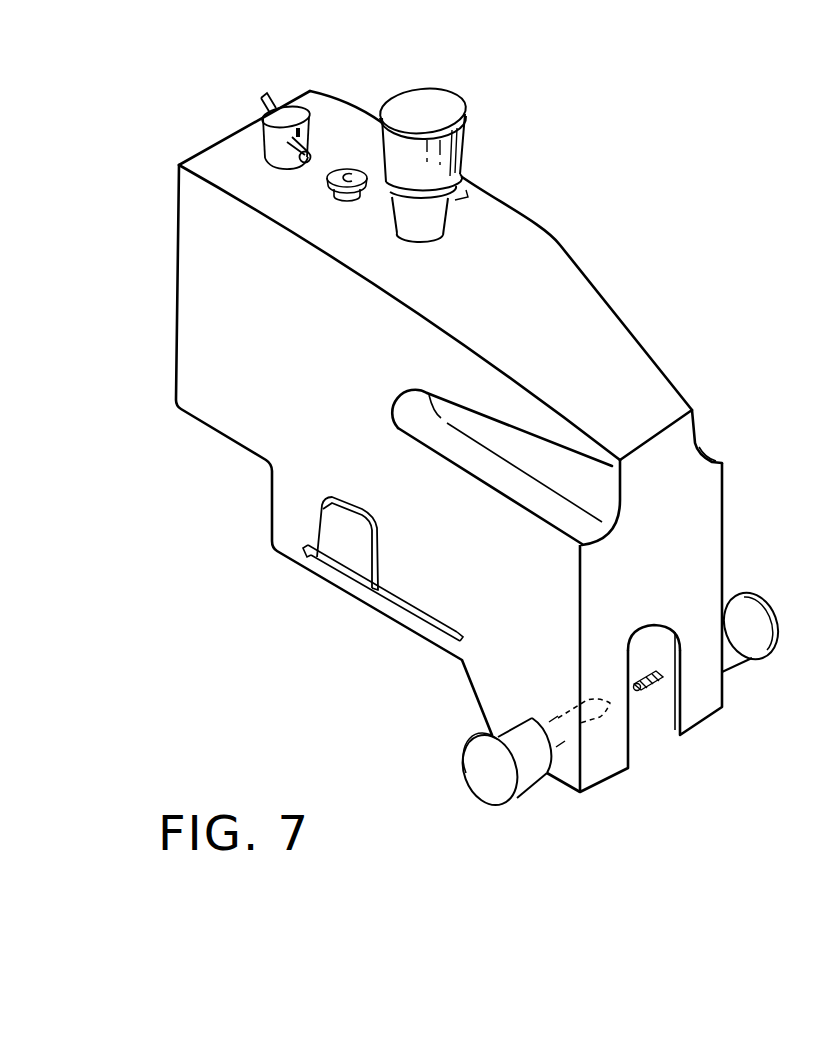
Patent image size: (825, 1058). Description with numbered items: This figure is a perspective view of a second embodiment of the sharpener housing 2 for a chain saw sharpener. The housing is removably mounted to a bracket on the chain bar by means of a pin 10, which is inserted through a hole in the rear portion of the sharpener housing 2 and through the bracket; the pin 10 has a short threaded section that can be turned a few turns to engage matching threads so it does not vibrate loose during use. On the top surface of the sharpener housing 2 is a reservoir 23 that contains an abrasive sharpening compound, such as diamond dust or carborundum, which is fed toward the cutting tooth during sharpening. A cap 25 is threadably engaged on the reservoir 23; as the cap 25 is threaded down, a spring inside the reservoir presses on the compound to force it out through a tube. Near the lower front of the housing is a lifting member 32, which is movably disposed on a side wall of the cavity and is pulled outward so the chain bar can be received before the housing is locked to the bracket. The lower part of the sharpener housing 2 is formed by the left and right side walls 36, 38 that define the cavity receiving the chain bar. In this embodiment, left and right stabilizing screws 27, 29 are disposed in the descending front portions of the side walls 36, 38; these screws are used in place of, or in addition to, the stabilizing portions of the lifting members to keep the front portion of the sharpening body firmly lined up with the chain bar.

The sharpener housing 2 is at (612, 265).
The pin 10 is at (268, 142).
The cap 25 is at (445, 153).
The reservoir 23 is at (460, 178).
The left lifting member 32 is at (340, 555).
The right stabilizing screw 29 is at (492, 780).
The left stabilizing screw 27 is at (735, 645).
The left side wall 36 is at (697, 703).
The right side wall 38 is at (598, 757).